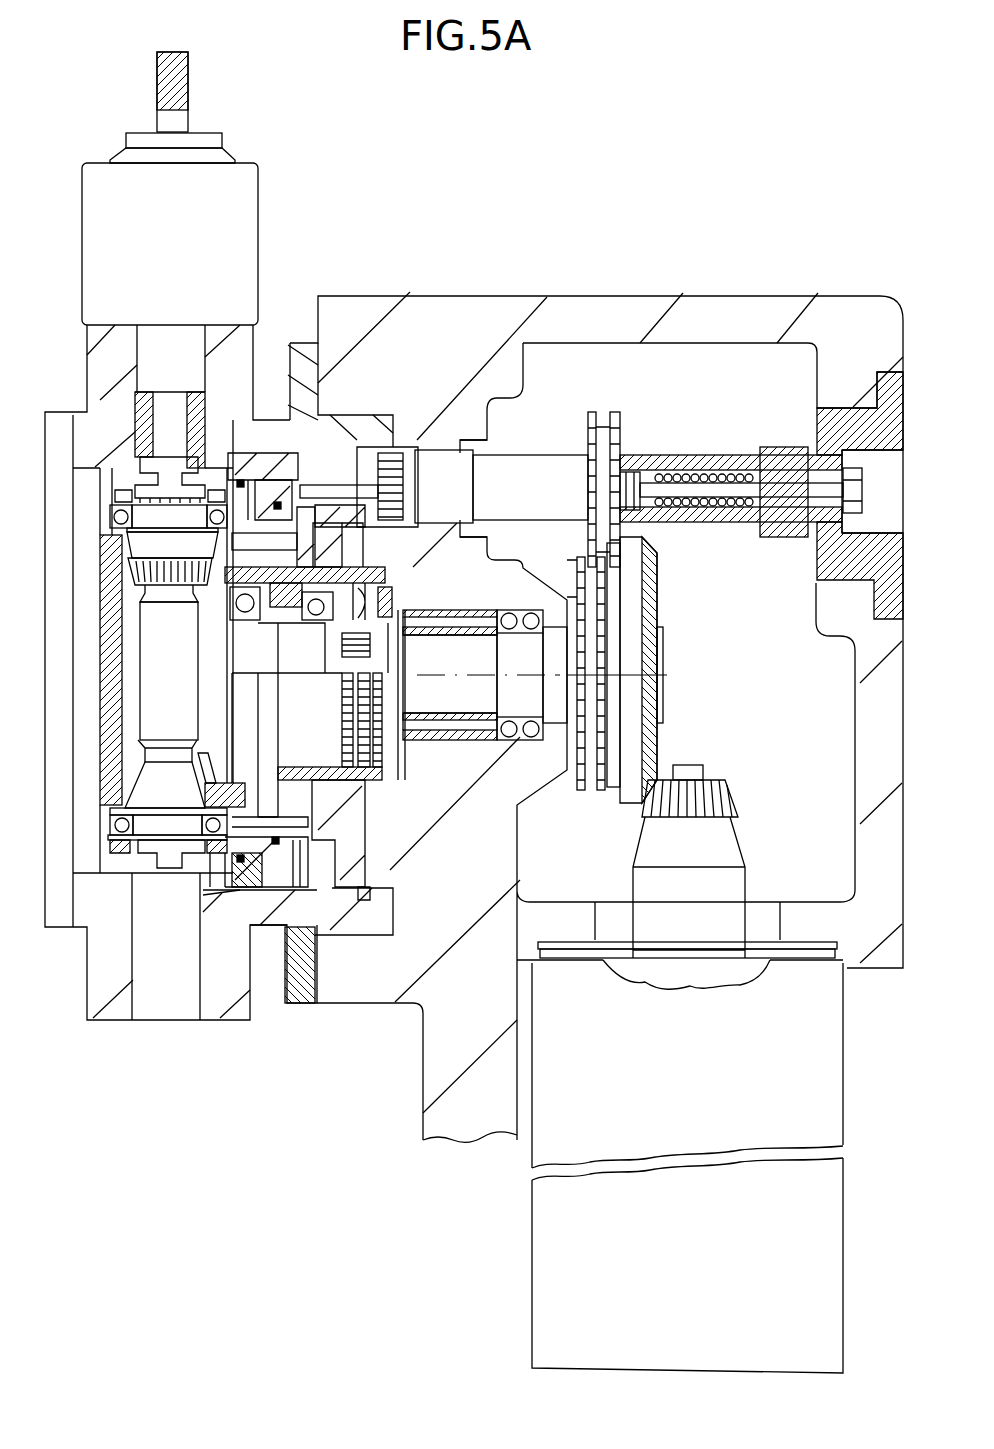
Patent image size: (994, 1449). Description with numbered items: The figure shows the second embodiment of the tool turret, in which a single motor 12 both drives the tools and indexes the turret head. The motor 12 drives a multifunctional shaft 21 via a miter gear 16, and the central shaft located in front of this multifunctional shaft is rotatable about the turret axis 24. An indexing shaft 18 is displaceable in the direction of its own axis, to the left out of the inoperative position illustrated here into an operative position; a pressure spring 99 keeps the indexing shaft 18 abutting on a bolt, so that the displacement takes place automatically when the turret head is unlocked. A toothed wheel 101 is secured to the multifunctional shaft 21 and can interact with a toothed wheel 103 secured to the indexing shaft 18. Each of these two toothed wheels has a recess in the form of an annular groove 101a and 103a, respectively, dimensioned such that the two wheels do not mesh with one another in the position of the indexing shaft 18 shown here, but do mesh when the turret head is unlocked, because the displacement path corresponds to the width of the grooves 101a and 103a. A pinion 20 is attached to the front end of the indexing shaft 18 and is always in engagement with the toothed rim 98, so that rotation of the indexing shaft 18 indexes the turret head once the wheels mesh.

The toothed rim 98 is at (377, 447).
The pinion 20 is at (408, 447).
The indexing shaft 18 is at (540, 460).
The annular groove 103a is at (594, 412).
The toothed wheel 103 is at (628, 427).
The pressure spring 99 is at (710, 460).
The turret axis 24 is at (632, 668).
The miter gear 16 is at (681, 734).
The multifunctional shaft 21 is at (460, 702).
The toothed wheel 101 is at (584, 745).
The annular groove 101a is at (598, 778).
The motor 12 is at (541, 1122).